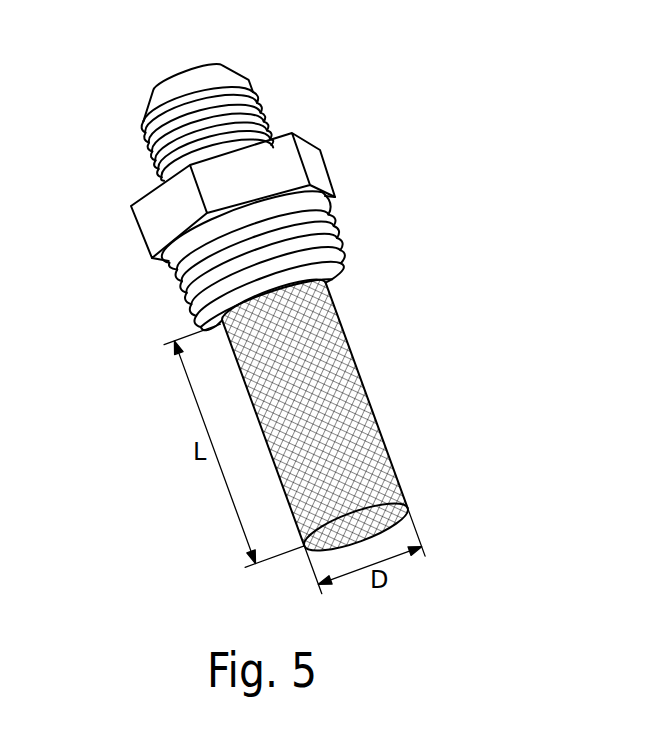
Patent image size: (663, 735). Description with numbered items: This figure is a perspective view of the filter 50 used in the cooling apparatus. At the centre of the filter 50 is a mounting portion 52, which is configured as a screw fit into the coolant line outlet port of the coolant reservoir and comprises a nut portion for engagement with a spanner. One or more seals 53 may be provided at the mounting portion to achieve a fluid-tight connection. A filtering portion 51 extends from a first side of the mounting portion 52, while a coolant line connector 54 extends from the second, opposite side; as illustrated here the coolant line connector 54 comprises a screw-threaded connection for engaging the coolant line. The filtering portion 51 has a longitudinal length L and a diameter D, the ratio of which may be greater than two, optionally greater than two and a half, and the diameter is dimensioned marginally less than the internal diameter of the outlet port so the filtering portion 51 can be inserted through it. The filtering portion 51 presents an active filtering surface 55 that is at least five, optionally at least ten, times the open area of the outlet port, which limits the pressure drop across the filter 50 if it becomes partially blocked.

The filter 50 is at (357, 242).
The filtering portion 51 is at (403, 418).
The mounting portion 52 is at (322, 183).
The seal 53 is at (173, 272).
The coolant line connector 54 is at (276, 101).
The active filtering surface 55 is at (374, 464).